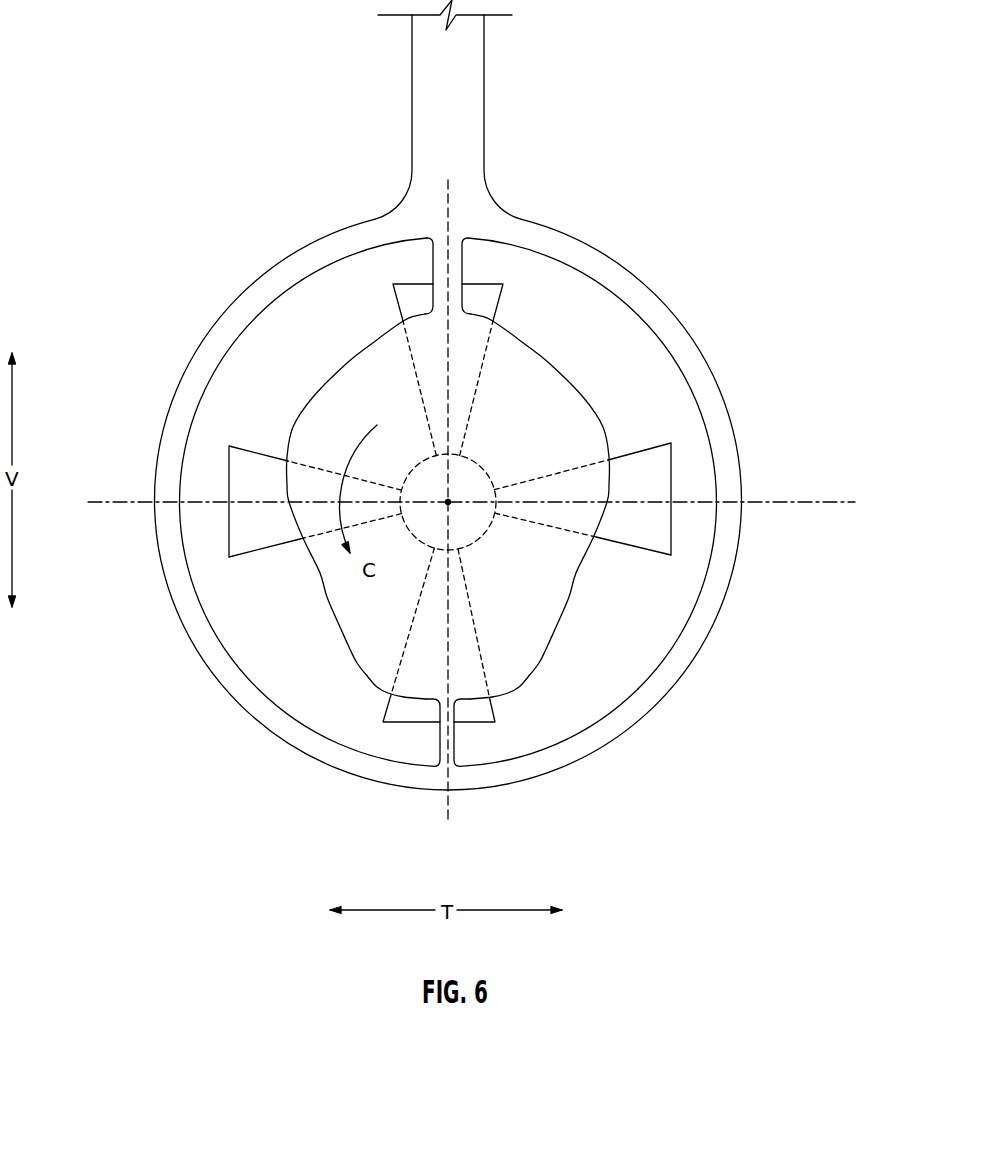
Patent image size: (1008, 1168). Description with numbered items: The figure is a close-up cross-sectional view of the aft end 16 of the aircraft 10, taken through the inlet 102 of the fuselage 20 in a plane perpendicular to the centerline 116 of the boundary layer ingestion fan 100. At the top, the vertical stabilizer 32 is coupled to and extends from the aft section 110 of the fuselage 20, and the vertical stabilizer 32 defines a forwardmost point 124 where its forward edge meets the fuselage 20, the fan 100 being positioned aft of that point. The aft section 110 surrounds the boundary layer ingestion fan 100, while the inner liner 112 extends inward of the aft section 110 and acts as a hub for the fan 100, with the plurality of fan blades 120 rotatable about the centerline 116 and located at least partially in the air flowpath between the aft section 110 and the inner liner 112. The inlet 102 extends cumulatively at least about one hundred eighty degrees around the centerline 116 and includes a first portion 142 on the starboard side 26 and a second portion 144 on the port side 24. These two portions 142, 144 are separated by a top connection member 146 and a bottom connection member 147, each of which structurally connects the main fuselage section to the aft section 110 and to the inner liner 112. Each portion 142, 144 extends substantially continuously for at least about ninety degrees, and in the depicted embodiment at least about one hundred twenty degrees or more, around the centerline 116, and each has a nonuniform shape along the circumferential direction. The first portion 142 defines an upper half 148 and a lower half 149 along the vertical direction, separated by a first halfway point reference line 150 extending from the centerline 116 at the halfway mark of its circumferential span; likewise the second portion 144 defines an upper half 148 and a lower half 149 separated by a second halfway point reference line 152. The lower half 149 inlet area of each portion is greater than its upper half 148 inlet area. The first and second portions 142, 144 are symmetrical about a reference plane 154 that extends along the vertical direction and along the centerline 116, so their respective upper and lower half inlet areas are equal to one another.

The aircraft 10 is at (702, 118).
The aft end 16 is at (142, 277).
The fuselage 20 is at (752, 457).
The port side 24 is at (877, 395).
The starboard side 26 is at (108, 455).
The vertical stabilizer 32 is at (470, 95).
The boundary layer ingestion fan 100 is at (525, 297).
The inlet 102 is at (647, 650).
The aft section 110 is at (709, 406).
The inner liner 112 is at (586, 400).
The centerline 116 is at (448, 502).
The fan blades 120 is at (653, 540).
The forwardmost point 124 is at (458, 203).
The first portion 142 is at (617, 340).
The second portion 144 is at (290, 343).
The top connection member 146 is at (453, 272).
The bottom connection member 147 is at (457, 747).
The upper half 148 is at (320, 307).
The lower half 149 is at (303, 700).
The first halfway point reference line 150 is at (772, 507).
The second halfway point reference line 152 is at (100, 503).
The reference plane 154 is at (450, 620).